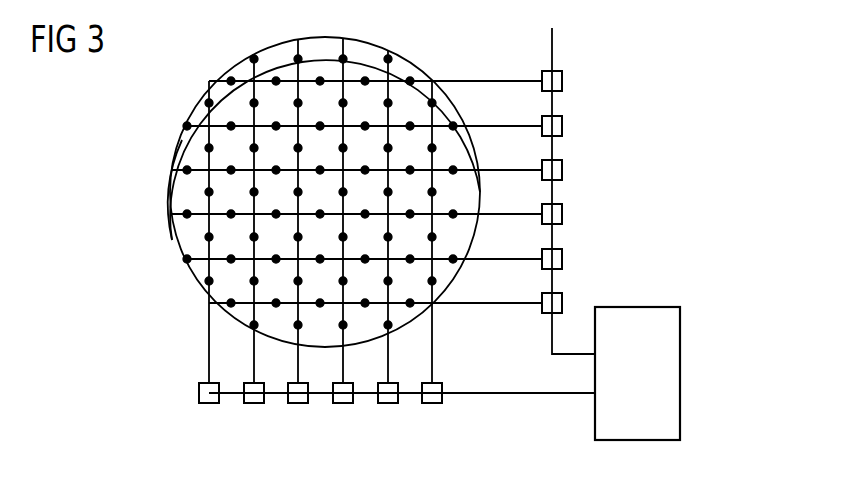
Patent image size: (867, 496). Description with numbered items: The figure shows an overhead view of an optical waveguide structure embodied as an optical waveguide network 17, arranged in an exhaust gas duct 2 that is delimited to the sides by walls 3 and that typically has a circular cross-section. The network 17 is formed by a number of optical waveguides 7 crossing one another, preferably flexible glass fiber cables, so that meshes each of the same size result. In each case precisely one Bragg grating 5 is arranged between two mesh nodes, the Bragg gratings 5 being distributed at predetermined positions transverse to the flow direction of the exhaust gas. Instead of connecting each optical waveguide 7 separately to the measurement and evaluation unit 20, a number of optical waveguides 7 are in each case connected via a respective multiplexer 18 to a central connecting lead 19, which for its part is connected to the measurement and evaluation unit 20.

The exhaust gas duct 2 is at (193, 286).
The walls 3 is at (172, 240).
The Bragg gratings 5 is at (187, 173).
The optical waveguide 7 is at (210, 128).
The optical waveguide network 17 is at (191, 98).
The multiplexer 18 is at (562, 126).
The central connecting lead 19 is at (555, 283).
The measurement and evaluation unit 20 is at (680, 365).